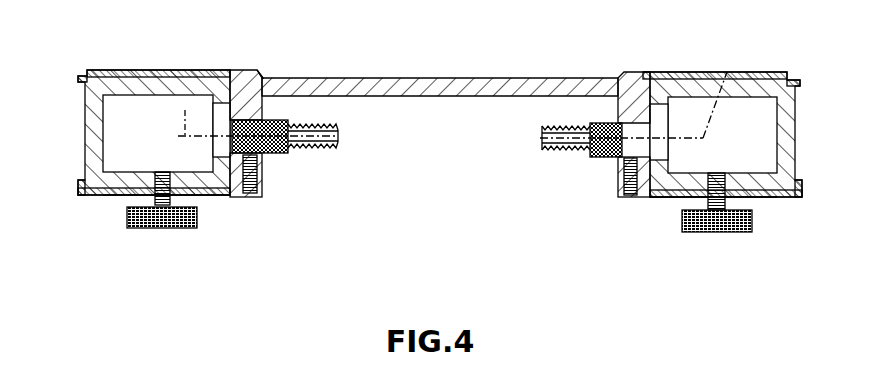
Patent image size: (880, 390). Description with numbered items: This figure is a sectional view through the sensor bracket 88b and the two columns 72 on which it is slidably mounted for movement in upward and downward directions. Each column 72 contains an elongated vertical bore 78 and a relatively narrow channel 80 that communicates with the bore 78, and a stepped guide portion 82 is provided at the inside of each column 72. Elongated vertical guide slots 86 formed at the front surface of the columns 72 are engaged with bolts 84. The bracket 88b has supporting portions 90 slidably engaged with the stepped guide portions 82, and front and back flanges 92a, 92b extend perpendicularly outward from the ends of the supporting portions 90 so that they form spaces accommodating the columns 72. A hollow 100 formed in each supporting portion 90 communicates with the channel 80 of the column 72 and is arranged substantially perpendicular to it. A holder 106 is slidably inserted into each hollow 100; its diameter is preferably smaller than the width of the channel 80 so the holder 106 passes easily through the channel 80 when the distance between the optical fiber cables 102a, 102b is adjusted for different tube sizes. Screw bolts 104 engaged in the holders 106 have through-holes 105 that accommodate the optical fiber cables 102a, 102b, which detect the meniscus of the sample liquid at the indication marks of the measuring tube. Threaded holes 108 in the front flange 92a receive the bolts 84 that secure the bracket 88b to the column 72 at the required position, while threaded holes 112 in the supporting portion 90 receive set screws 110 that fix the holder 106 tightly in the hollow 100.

The column 72 is at (97, 120).
The elongated vertical bore 78 is at (128, 107).
The channel 80 is at (217, 155).
The stepped guide portion 82 is at (210, 197).
The bolt 84 is at (138, 228).
The vertical guide slot 86 is at (160, 172).
The sensor bracket 88b is at (413, 78).
The supporting portion 90 is at (250, 74).
The front flange 92a is at (100, 197).
The back flange 92b is at (108, 72).
The hollow 100 is at (185, 110).
The optical fiber cable 102a is at (150, 62).
The optical fiber cable 102b is at (727, 72).
The screw bolt 104 is at (300, 150).
The through-hole 105 is at (313, 128).
The holder 106 is at (268, 120).
The threaded hole 108 is at (147, 193).
The set screw 110 is at (265, 175).
The threaded hole 112 is at (250, 197).